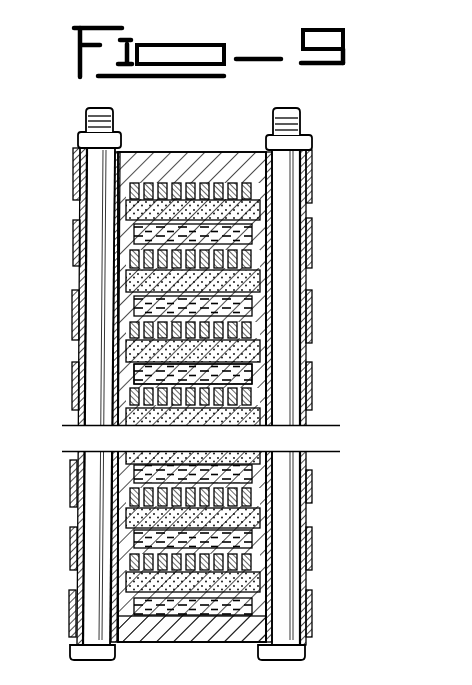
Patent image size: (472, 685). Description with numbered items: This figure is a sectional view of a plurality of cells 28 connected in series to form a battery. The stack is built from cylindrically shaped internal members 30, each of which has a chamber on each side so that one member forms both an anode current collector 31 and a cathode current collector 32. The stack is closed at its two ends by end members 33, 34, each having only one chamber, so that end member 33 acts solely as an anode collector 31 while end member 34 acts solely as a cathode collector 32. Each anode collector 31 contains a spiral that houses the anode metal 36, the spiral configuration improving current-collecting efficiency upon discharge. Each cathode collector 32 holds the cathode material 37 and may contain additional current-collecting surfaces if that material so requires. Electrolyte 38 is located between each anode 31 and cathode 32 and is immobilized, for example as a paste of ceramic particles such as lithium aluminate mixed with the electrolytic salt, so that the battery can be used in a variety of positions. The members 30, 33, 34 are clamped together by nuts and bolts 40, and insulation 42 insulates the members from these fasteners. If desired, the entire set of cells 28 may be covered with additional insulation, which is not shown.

The cells 28 is at (66, 262).
The internal member 30 is at (312, 247).
The anode current collector 31 is at (222, 185).
The cathode current collector 32 is at (138, 305).
The end member 33 is at (183, 131).
The end member 34 is at (222, 632).
The anode metal 36 is at (150, 398).
The cathode material 37 is at (193, 376).
The electrolyte 38 is at (201, 418).
The nuts and bolts 40 is at (94, 125).
The insulation 42 is at (78, 580).